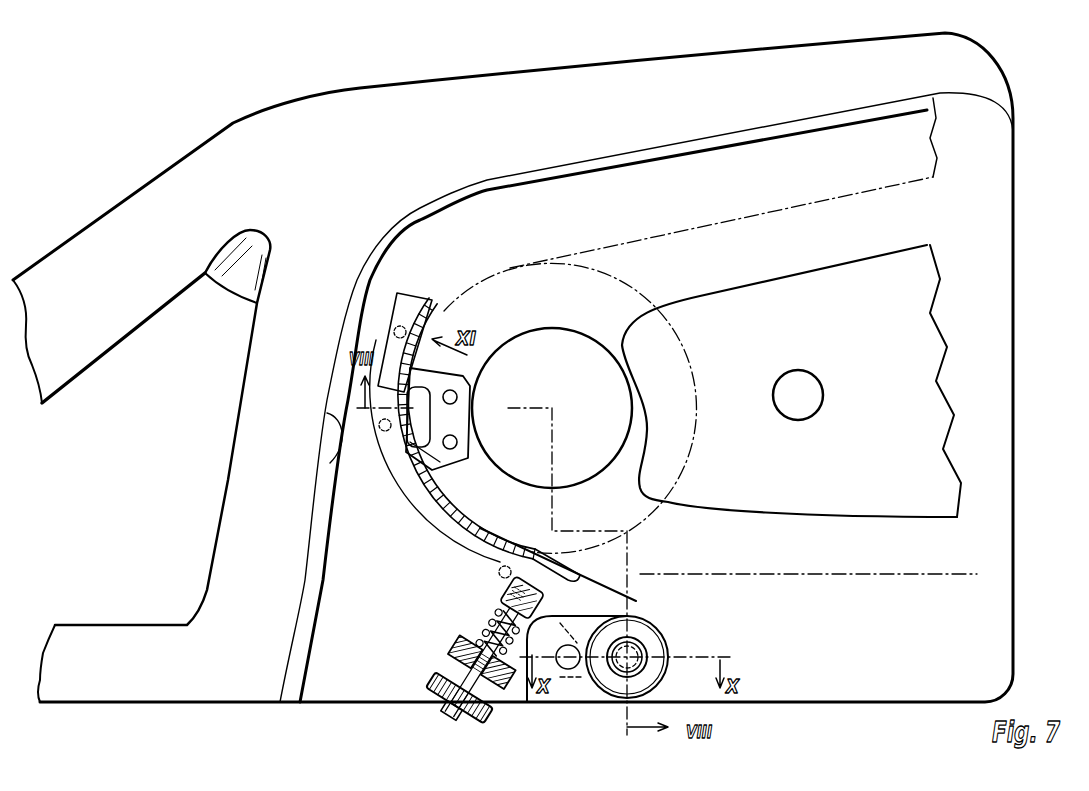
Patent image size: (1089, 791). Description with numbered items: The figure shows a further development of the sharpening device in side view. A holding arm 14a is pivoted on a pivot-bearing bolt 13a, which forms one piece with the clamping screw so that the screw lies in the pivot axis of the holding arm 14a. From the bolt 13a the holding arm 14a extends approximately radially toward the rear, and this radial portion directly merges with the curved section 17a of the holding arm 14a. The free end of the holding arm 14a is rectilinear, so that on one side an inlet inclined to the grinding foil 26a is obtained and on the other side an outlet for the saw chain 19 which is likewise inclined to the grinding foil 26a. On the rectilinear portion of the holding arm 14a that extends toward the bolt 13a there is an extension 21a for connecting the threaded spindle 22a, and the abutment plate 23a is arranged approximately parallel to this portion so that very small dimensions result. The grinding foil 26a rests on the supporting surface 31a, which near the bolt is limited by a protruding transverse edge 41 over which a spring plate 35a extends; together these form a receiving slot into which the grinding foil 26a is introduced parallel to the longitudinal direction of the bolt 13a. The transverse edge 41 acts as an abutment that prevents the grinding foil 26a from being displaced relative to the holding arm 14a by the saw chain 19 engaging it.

The pivot-bearing bolt 13a is at (637, 648).
The holding arm 14a is at (410, 538).
The curved section 17a is at (393, 480).
The saw chain 19 is at (767, 575).
The extension 21a is at (505, 595).
The threaded spindle 22a is at (485, 623).
The abutment plate 23a is at (457, 650).
The grinding foil 26a is at (437, 290).
The supporting surface 31a is at (477, 540).
The spring plate 35a is at (562, 572).
The transverse edge 41 is at (628, 599).